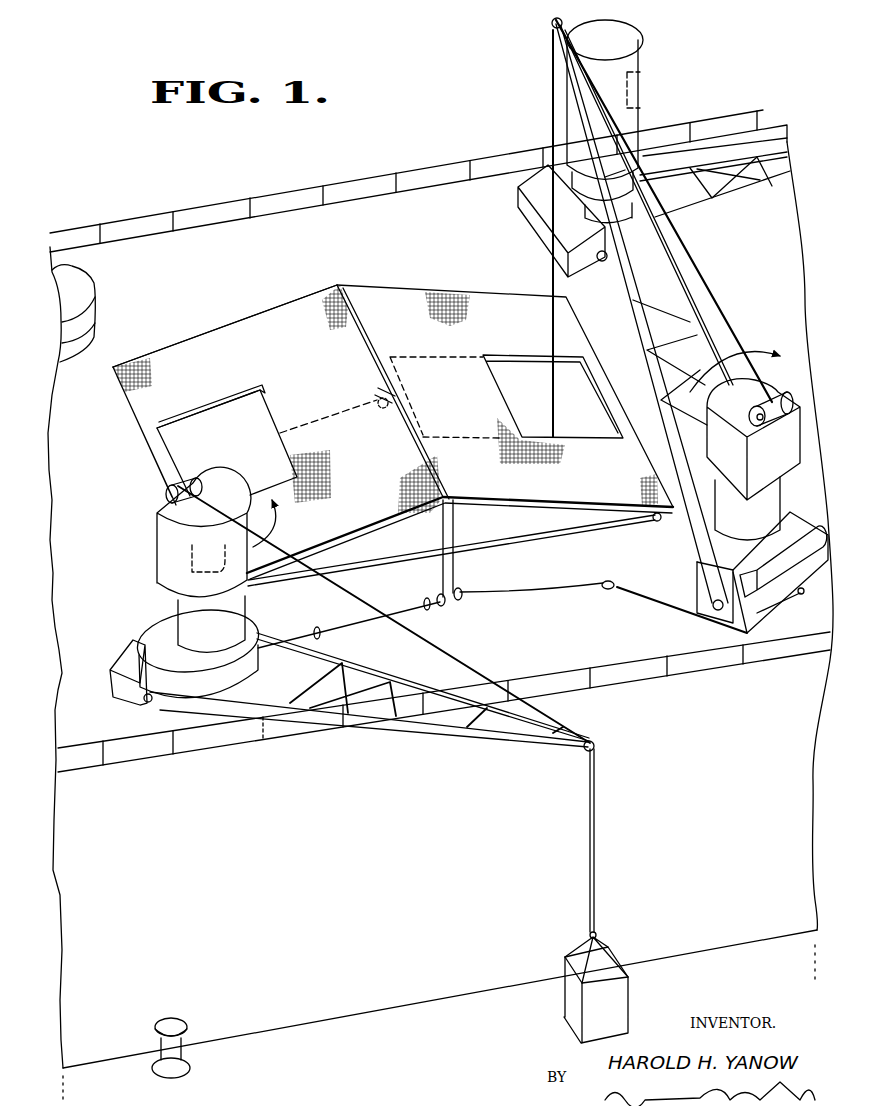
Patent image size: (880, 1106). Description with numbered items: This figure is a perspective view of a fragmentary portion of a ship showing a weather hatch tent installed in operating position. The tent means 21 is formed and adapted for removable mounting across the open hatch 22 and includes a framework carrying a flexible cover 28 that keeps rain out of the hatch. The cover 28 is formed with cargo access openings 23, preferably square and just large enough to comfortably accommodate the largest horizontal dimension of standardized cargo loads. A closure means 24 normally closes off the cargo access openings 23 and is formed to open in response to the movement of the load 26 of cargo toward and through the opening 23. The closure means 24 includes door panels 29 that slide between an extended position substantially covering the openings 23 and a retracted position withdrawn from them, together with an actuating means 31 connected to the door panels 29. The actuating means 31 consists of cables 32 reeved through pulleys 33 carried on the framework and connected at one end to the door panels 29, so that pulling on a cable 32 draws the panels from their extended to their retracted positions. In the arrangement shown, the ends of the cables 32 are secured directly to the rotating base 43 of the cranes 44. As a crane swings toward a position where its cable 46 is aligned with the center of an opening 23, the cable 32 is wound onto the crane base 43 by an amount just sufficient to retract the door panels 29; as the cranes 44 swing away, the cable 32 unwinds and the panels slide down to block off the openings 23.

The tent means 21 is at (272, 305).
The open hatch 22 is at (512, 526).
The cargo access openings 23 is at (222, 405).
The closure means 24 is at (193, 445).
The load 26 is at (625, 1005).
The flexible cover 28 is at (322, 340).
The door panels 29 is at (241, 465).
The actuating means 31 is at (380, 392).
The cables 32 is at (358, 623).
The pulleys 33 is at (387, 420).
The base 43 is at (97, 308).
The cranes 44 is at (578, 171).
The cable 46 is at (555, 325).